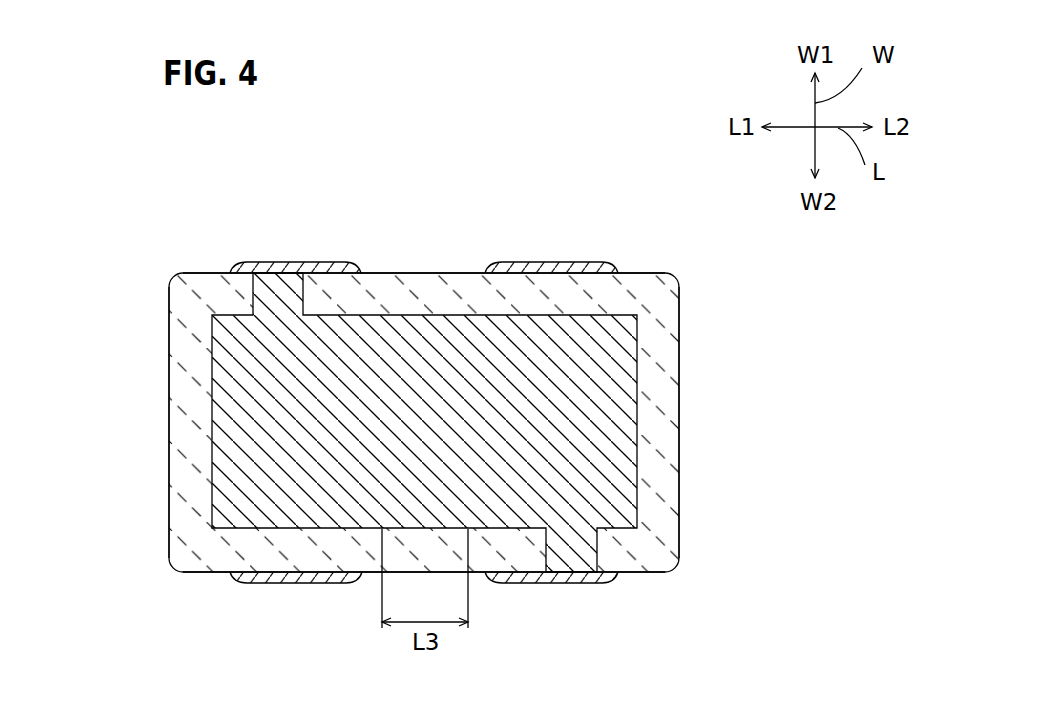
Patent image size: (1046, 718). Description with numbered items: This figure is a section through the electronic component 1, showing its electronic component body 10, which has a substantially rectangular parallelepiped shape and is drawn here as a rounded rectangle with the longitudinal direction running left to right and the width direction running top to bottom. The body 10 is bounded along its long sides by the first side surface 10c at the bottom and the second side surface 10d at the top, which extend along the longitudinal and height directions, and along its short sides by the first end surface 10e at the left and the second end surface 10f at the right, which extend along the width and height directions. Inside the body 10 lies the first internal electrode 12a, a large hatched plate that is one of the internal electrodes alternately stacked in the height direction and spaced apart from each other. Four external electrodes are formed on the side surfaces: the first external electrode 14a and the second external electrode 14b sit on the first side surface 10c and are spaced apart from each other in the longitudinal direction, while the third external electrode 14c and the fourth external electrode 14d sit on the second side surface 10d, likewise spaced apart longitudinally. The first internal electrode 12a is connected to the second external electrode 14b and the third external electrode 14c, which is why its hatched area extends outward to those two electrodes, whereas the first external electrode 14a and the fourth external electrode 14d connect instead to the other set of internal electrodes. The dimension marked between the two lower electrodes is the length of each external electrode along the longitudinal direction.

The electronic component 1 is at (627, 199).
The electronic component body 10 is at (429, 271).
The first side surface 10c is at (193, 573).
The second side surface 10d is at (210, 272).
The first end surface 10e is at (169, 443).
The second end surface 10f is at (680, 457).
The first internal electrode 12a is at (371, 313).
The first external electrode 14a is at (273, 586).
The second external electrode 14b is at (530, 586).
The third external electrode 14c is at (290, 260).
The fourth external electrode 14d is at (546, 260).